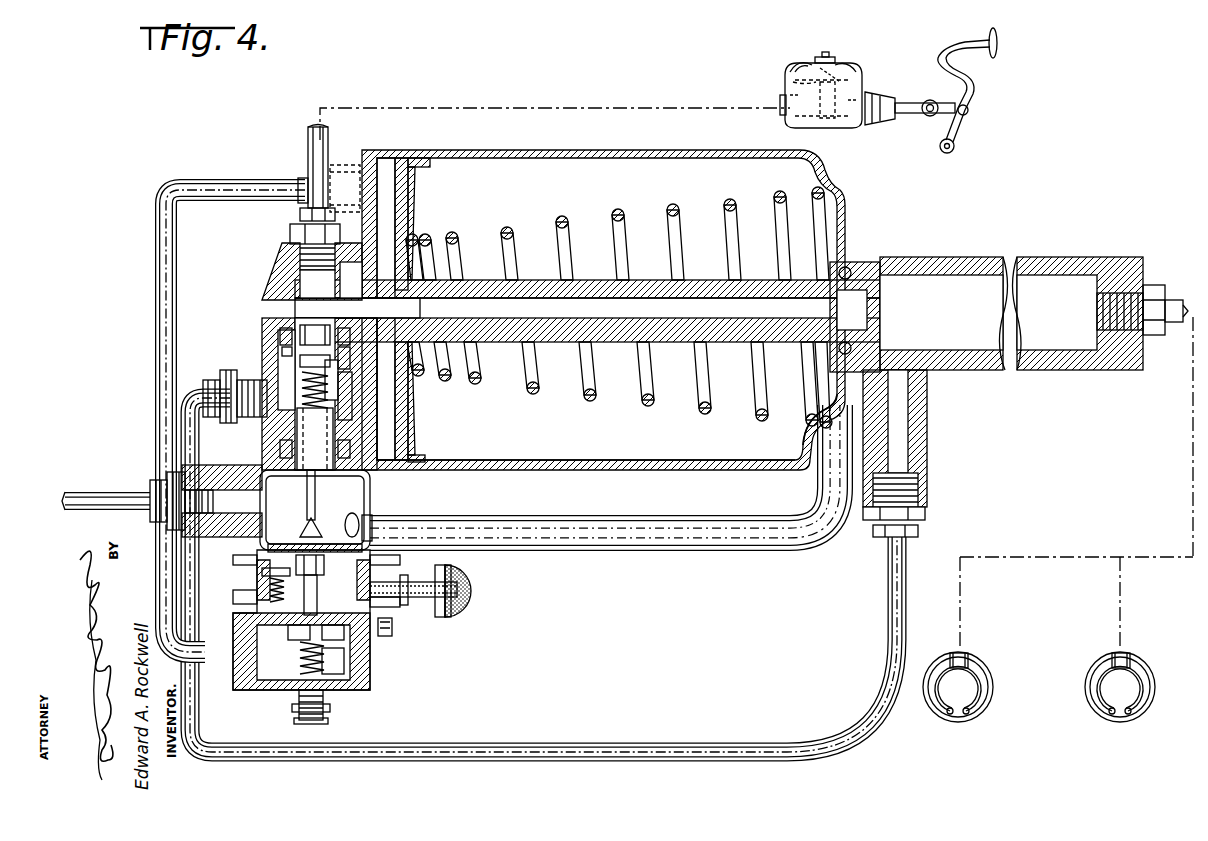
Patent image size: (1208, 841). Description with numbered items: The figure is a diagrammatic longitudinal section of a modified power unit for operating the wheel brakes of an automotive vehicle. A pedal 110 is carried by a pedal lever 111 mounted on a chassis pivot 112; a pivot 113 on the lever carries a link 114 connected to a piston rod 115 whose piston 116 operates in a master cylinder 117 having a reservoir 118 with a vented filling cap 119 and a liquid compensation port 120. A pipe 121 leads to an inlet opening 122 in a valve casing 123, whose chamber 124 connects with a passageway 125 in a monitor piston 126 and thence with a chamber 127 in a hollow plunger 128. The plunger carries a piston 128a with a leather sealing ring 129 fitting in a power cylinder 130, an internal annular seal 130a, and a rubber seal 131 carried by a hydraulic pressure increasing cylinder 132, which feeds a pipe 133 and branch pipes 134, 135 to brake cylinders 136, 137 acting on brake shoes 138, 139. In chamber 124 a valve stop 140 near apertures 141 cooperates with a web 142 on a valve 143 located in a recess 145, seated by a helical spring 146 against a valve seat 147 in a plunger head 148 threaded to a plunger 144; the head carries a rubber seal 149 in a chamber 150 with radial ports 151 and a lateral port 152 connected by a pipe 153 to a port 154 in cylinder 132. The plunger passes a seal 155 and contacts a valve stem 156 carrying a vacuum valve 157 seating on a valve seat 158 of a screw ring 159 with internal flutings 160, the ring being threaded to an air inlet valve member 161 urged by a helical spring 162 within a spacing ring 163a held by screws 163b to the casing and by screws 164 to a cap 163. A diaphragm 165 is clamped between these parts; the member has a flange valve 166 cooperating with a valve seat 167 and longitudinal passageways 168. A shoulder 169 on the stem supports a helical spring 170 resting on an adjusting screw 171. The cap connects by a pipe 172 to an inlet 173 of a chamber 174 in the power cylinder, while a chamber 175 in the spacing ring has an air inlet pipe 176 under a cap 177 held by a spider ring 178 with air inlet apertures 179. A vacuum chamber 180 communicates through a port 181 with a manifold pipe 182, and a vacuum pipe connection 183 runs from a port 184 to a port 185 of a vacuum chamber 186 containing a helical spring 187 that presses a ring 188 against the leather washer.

The pedal 110 is at (997, 45).
The pedal lever 111 is at (955, 44).
The pivot 112 is at (955, 147).
The pivot 113 is at (966, 105).
The link 114 is at (924, 114).
The piston rod 115 is at (910, 103).
The piston 116 is at (832, 124).
The master cylinder 117 is at (800, 66).
The reservoir 118 is at (840, 74).
The vented filling cap 119 is at (824, 55).
The liquid compensation port 120 is at (793, 82).
The pipe 121 is at (550, 107).
The inlet opening 122 is at (300, 229).
The valve casing 123 is at (290, 240).
The chamber 124 is at (302, 287).
The passageway 125 is at (622, 342).
The monitor piston 126 is at (530, 280).
The chamber 127 is at (866, 290).
The hollow plunger 128 is at (726, 279).
The piston 128a is at (416, 188).
The leather sealing ring 129 is at (422, 157).
The power cylinder 130 is at (628, 150).
The internal annular seal 130a is at (445, 350).
The rubber seal 131 is at (838, 349).
The hydraulic pressure increasing cylinder 132 is at (1000, 257).
The pipe 133 is at (1192, 432).
The branch pipe 134 is at (1028, 556).
The branch pipe 135 is at (1122, 598).
The brake cylinder 136 is at (962, 658).
The brake cylinder 137 is at (1124, 658).
The brake shoe 138 is at (938, 696).
The brake shoe 139 is at (1100, 696).
The valve stop 140 is at (296, 310).
The apertures 141 is at (356, 280).
The web 142 is at (280, 334).
The valve 143 is at (282, 352).
The plunger 144 is at (315, 439).
The recess 145 is at (322, 394).
The helical spring 146 is at (312, 403).
The valve seat 147 is at (300, 338).
The plunger head 148 is at (360, 339).
The rubber seal 149 is at (361, 359).
The chamber 150 is at (361, 396).
The radial ports 151 is at (300, 378).
The lateral port 152 is at (226, 378).
The pipe 153 is at (186, 432).
The port 154 is at (903, 420).
The seal 155 is at (280, 446).
The valve stem 156 is at (307, 483).
The vacuum valve 157 is at (300, 533).
The valve seat 158 is at (268, 548).
The screw ring 159 is at (311, 567).
The internal flutings 160 is at (350, 525).
The air inlet valve member 161 is at (312, 595).
The helical spring 162 is at (262, 588).
The cap 163 is at (363, 668).
The spacing ring 163a is at (250, 600).
The screws 163b is at (233, 560).
The screws 164 is at (392, 632).
The diaphragm 165 is at (258, 575).
The flange valve 166 is at (343, 639).
The valve seat 167 is at (410, 606).
The longitudinal passageways 168 is at (338, 661).
The shoulder 169 is at (295, 636).
The helical spring 170 is at (300, 656).
The adjusting screw 171 is at (322, 696).
The pipe 172 is at (188, 180).
The inlet 173 is at (363, 152).
The chamber 174 is at (386, 157).
The chamber 175 is at (410, 586).
The air inlet pipe 176 is at (420, 606).
The cap 177 is at (468, 588).
The spider ring 178 is at (466, 603).
The air inlet apertures 179 is at (452, 616).
The vacuum chamber 180 is at (345, 483).
The port 181 is at (228, 468).
The pipe 182 is at (88, 498).
The vacuum pipe connection 183 is at (655, 552).
The port 184 is at (372, 527).
The port 185 is at (816, 430).
The vacuum chamber 186 is at (567, 470).
The helical spring 187 is at (512, 232).
The ring 188 is at (416, 402).